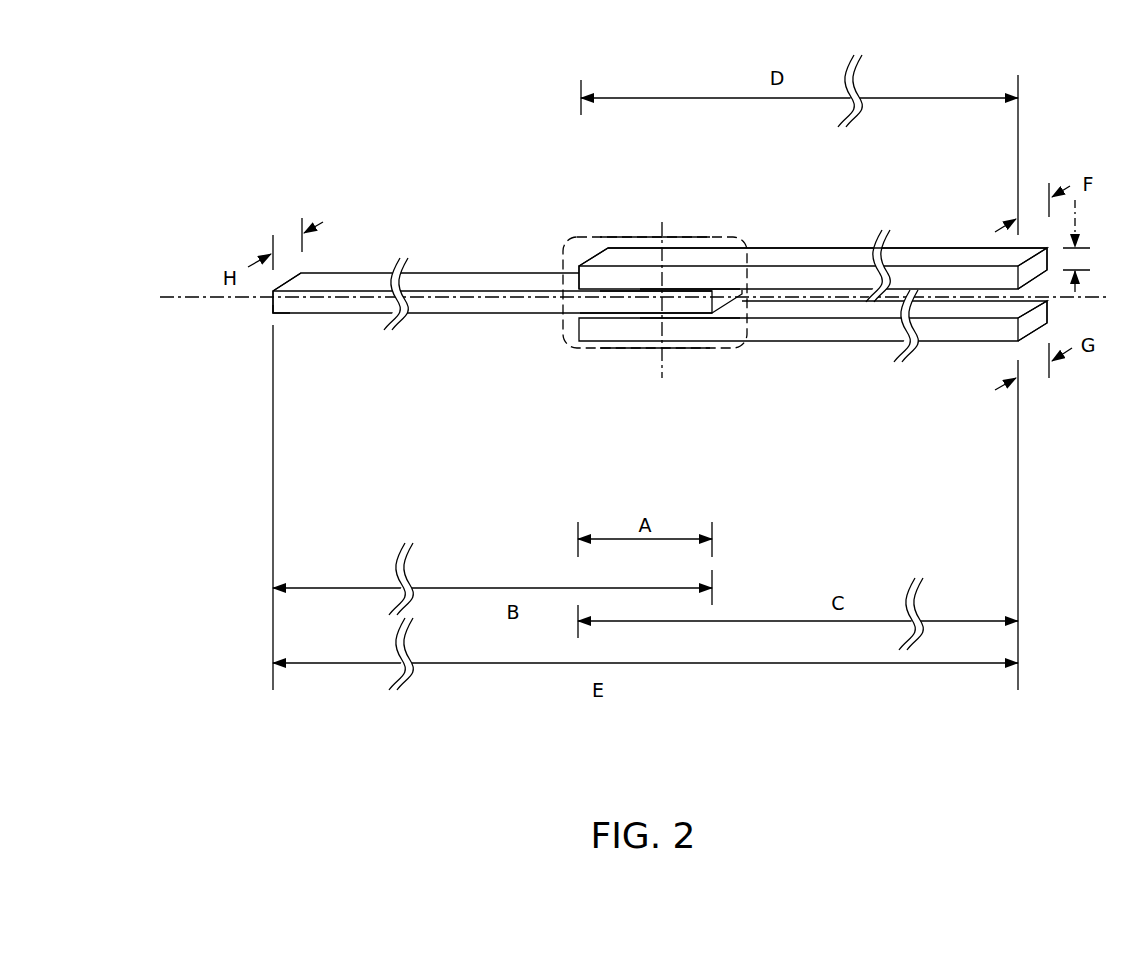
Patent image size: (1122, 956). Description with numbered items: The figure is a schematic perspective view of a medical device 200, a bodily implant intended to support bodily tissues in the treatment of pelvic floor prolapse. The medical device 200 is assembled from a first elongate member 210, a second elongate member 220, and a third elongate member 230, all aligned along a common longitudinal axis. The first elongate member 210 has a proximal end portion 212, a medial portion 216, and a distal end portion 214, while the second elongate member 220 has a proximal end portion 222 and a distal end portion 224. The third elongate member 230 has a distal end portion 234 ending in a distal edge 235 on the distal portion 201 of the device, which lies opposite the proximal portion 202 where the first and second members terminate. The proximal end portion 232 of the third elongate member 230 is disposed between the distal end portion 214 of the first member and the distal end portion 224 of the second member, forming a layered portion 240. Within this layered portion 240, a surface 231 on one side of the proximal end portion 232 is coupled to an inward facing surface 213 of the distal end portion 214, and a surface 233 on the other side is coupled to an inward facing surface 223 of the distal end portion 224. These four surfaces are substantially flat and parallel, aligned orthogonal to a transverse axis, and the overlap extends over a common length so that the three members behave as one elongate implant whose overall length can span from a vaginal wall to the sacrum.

The medical device 200 is at (465, 103).
The distal portion 201 is at (338, 160).
The proximal portion 202 is at (950, 120).
The first elongate member 210 is at (788, 255).
The proximal end portion 212 is at (970, 232).
The surface 213 is at (687, 285).
The distal end portion 214 is at (633, 240).
The medial portion 216 is at (820, 228).
The second elongate member 220 is at (843, 332).
The proximal end portion 222 is at (958, 375).
The surface 223 is at (685, 318).
The distal end portion 224 is at (632, 368).
The third elongate member 230 is at (338, 302).
The surface 231 is at (628, 287).
The proximal end portion 232 is at (568, 260).
The surface 233 is at (610, 315).
The distal end portion 234 is at (336, 257).
The distal edge 235 is at (270, 312).
The layered portion 240 is at (598, 357).